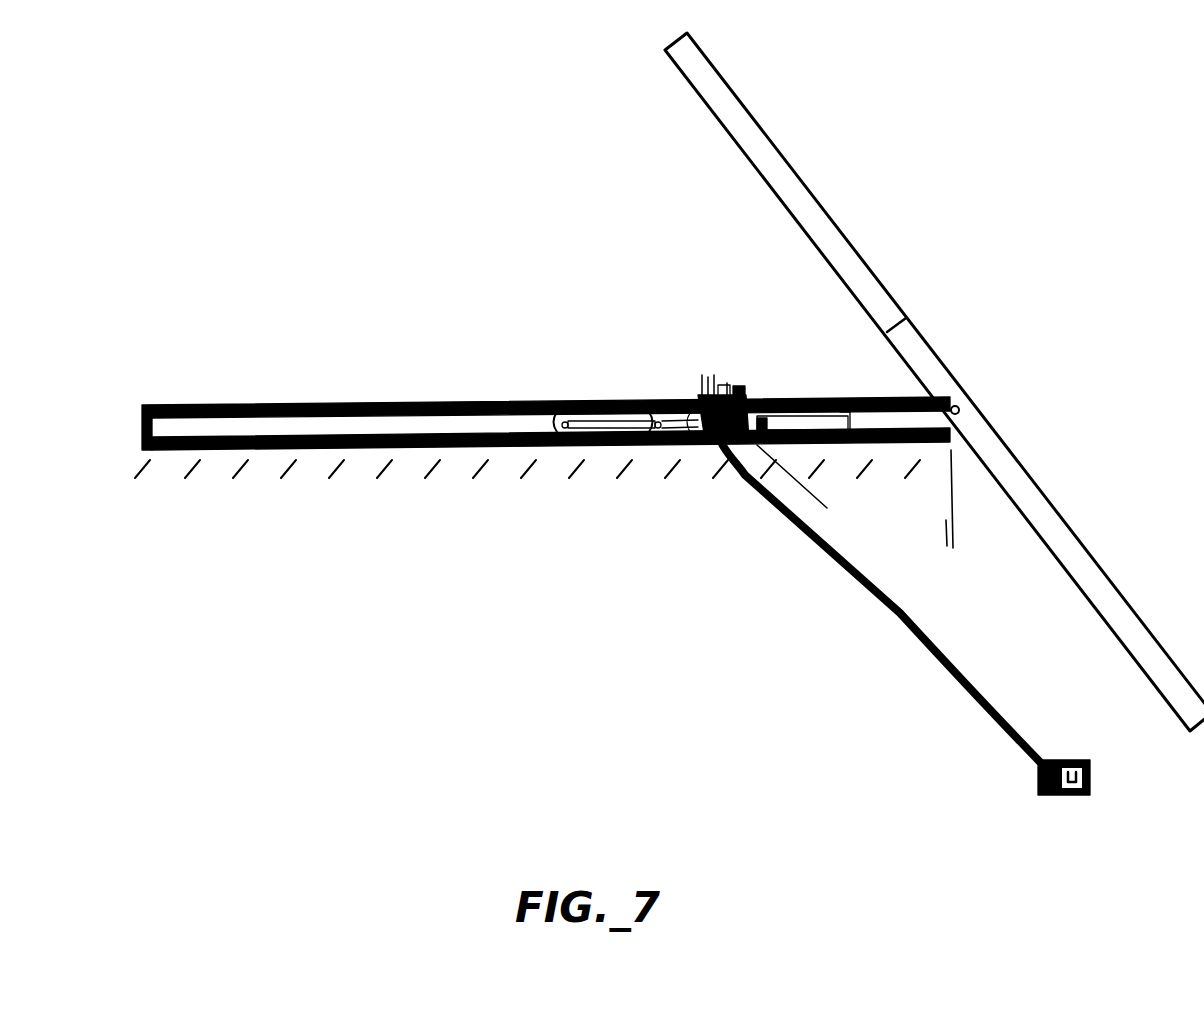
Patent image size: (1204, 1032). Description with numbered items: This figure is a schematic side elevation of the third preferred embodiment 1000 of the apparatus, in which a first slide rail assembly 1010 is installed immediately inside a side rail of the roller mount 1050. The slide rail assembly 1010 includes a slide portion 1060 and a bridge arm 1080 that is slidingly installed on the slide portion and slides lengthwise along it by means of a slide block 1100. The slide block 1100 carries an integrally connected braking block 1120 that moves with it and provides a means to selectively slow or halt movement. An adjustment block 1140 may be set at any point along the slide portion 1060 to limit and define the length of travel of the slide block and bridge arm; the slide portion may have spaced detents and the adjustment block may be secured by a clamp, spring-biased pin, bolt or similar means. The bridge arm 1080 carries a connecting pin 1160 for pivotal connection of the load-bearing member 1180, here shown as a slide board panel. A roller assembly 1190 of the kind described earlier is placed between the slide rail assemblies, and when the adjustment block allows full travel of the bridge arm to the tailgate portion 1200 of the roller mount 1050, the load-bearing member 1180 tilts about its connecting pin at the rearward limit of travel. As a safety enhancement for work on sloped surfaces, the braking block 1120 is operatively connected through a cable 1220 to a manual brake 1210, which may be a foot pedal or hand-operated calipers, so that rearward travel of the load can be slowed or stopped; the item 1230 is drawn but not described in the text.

The third preferred embodiment 1000 is at (447, 245).
The first slide rail assembly 1010 is at (300, 400).
The roller mount 1050 is at (290, 452).
The slide portion 1060 is at (532, 402).
The bridge arm 1080 is at (800, 400).
The slide block 1100 is at (722, 392).
The braking block 1120 is at (704, 390).
The adjustment block 1140 is at (742, 390).
The connecting pin 1160 is at (958, 408).
The load-bearing member 1180 is at (812, 195).
The roller assembly 1190 is at (600, 442).
The tailgate portion 1200 is at (842, 440).
The manual brake 1210 is at (822, 578).
The cable 1220 is at (1053, 798).
The cable 1230 is at (880, 602).